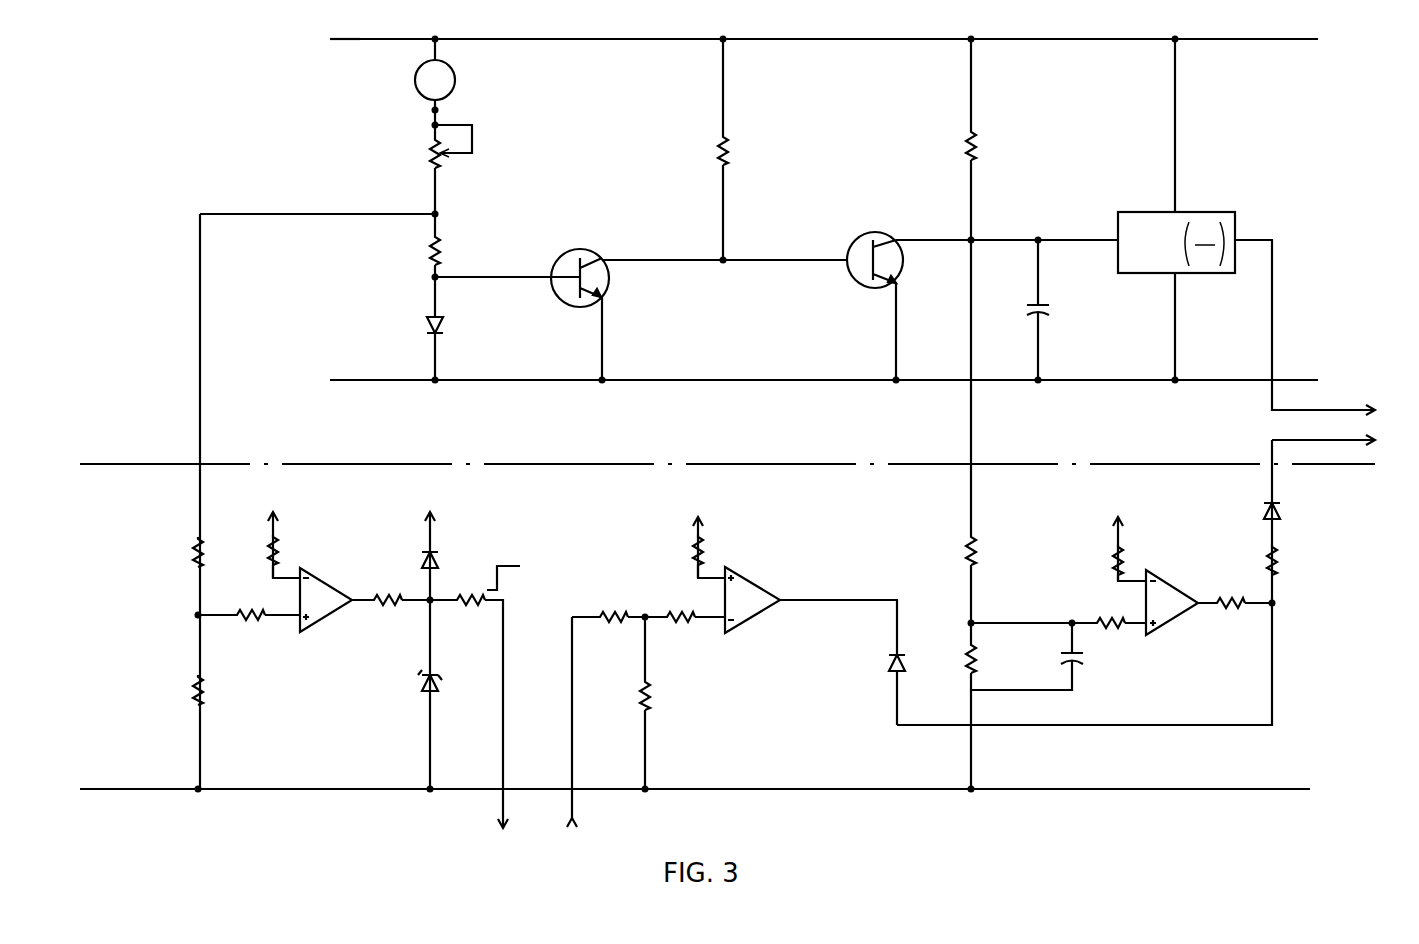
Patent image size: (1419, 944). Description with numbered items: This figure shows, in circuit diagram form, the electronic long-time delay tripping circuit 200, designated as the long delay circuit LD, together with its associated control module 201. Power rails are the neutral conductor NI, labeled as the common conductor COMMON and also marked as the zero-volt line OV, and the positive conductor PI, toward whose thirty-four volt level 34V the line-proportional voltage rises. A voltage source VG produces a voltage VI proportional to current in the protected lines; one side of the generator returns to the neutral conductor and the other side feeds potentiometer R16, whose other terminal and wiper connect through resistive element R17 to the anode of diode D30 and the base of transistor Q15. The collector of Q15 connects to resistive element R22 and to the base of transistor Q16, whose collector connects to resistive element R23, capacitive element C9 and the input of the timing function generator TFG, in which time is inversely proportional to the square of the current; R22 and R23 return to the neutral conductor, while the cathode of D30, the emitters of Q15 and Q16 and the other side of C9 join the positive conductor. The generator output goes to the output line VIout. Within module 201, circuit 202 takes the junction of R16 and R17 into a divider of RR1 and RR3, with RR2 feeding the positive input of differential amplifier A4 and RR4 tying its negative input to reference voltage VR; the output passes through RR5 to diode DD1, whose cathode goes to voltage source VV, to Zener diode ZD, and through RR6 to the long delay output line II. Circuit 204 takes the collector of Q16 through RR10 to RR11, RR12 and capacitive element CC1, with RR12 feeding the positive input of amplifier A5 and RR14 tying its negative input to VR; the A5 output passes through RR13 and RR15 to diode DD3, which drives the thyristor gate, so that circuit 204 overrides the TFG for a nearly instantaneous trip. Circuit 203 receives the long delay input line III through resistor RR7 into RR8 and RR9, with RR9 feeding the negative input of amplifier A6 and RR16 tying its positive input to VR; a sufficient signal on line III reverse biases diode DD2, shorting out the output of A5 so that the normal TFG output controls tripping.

The common conductor COMMON is at (827, 414).
The neutral conductor N1 NI is at (368, 36).
The zero-volt line OV is at (619, 39).
The thirty-four volt level 34V is at (309, 380).
The voltage source VG is at (456, 76).
The voltage V1 VI is at (438, 112).
The potentiometer resistive element R16 is at (426, 153).
The resistive element R17 is at (429, 251).
The diode D30 is at (445, 328).
The transistor Q15 is at (609, 277).
The transistor Q16 is at (904, 262).
The resistive element R22 is at (728, 155).
The resistive element R23 is at (965, 144).
The long-time delay tripping circuit 200 is at (826, 70).
The long delay circuit designation LD is at (780, 332).
The positive conductor P1 PI is at (657, 382).
The capacitive element C9 is at (1050, 315).
The timing function generator TFG is at (1212, 212).
The output line VI VIout is at (1272, 411).
The control module 201 is at (815, 494).
The long delay output circuit 202 is at (372, 566).
The overriding circuit 203 is at (815, 566).
The override circuit 204 is at (1183, 557).
The resistive element RR1 is at (192, 546).
The resistive element RR2 is at (254, 606).
The resistive element RR3 is at (205, 690).
The resistive element RR4 is at (266, 546).
The resistive element RR5 is at (386, 598).
The resistive element RR6 is at (474, 598).
The resistor RR7 is at (605, 614).
The resistive element RR8 is at (658, 696).
The resistive element RR9 is at (678, 614).
The resistive element RR10 is at (979, 554).
The resistive element RR11 is at (976, 659).
The resistive element RR12 is at (1108, 617).
The resistive element RR13 is at (1242, 601).
The resistive element RR14 is at (1115, 556).
The resistive element RR15 is at (1264, 558).
The resistive element RR16 is at (692, 554).
The reference voltage VR is at (696, 534).
The voltage source VV is at (431, 543).
The differential amplifier A4 is at (326, 600).
The differential amplifier A5 is at (1172, 602).
The differential amplifier A6 is at (752, 600).
The diode DD1 is at (420, 562).
The diode DD2 is at (888, 662).
The diode DD3 is at (1260, 512).
The Zener diode ZD is at (410, 683).
The capacitive element CC1 is at (1085, 663).
The long delay output line II is at (501, 844).
The long delay input line III is at (568, 821).